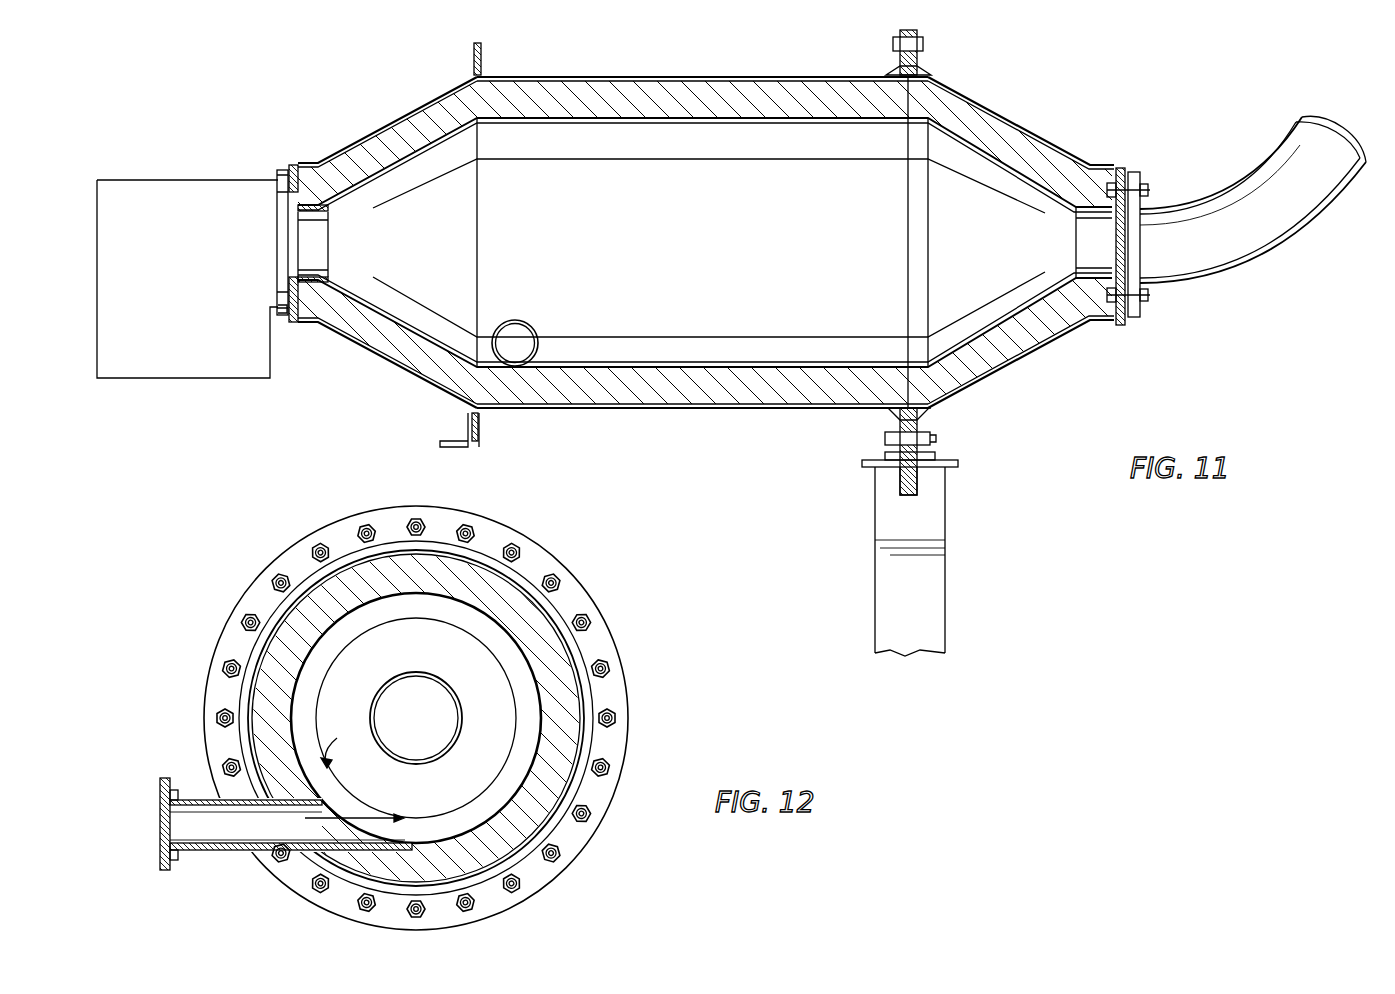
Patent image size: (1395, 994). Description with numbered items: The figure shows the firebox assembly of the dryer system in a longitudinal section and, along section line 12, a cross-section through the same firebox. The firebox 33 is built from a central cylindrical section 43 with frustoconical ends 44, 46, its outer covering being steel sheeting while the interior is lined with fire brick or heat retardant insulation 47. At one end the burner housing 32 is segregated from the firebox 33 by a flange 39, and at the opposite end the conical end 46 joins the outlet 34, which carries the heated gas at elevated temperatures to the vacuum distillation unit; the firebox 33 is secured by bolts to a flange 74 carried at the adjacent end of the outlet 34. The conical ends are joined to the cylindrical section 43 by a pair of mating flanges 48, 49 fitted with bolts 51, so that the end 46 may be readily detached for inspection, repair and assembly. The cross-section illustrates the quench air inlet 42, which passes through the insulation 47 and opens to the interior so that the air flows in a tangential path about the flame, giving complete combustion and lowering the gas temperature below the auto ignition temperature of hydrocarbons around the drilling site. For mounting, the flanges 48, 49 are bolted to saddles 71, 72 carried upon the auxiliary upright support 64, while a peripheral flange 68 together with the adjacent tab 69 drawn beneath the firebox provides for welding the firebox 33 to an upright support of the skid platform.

In FIG. 11, the section line 12- 12 is at (517, 18).
In FIG. 11, the burner housing 32 is at (185, 196).
In FIG. 11, the firebox 33 is at (771, 292).
In FIG. 12, the firebox 33 is at (560, 815).
In FIG. 11, the outlet 34 is at (1252, 243).
In FIG. 11, the flange 39 is at (283, 314).
In FIG. 12, the inlet 42 is at (214, 858).
In FIG. 11, the central cylindrical section 43 is at (728, 77).
In FIG. 11, the frustoconical end 44 is at (392, 120).
In FIG. 11, the frustoconical end 46 is at (1012, 126).
In FIG. 11, the insulation 47 is at (752, 102).
In FIG. 12, the insulation 47 is at (548, 668).
In FIG. 11, the flange 48 is at (885, 426).
In FIG. 12, the flange 48 is at (300, 552).
In FIG. 11, the flange 49 is at (917, 425).
In FIG. 11, the bolts 51 is at (925, 45).
In FIG. 12, the bolts 51 is at (245, 615).
In FIG. 11, the auxiliary upright support 64 is at (935, 525).
In FIG. 11, the peripheral flange 68 is at (480, 430).
In FIG. 11, the mounting tab 69 is at (470, 425).
In FIG. 11, the saddle 71 is at (935, 455).
In FIG. 11, the saddle 72 is at (890, 455).
In FIG. 11, the flange 74 is at (1140, 320).